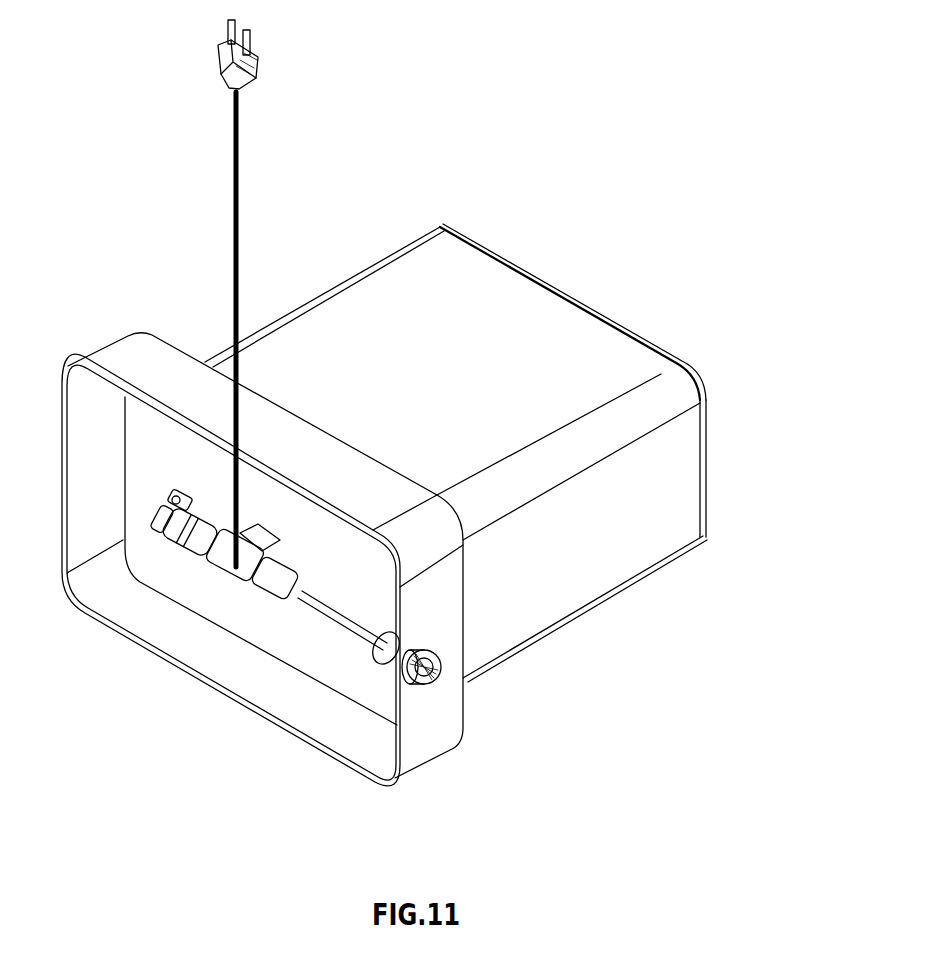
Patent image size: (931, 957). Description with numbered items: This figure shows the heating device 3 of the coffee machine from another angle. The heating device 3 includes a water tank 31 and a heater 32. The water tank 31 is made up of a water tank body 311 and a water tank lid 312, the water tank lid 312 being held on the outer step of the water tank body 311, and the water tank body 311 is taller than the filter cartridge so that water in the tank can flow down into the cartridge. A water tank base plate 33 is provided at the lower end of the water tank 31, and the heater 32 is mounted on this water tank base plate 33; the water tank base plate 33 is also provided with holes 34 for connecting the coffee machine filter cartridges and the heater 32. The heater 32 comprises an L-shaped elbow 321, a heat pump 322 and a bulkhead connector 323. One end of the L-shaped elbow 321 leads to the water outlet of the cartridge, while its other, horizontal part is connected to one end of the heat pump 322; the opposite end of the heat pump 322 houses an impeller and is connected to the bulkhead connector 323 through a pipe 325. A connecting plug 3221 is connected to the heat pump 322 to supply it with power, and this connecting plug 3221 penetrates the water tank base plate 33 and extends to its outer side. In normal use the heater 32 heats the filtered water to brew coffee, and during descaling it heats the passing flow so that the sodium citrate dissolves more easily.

The heating device 3 is at (833, 580).
The water tank 31 is at (776, 553).
The water tank body 311 is at (665, 567).
The water tank lid 312 is at (713, 549).
The heater 32 is at (769, 660).
The L-shaped elbow 321 is at (213, 535).
The heat pump 322 is at (285, 578).
The connecting plug 3221 is at (209, 58).
The bulkhead connector 323 is at (459, 680).
The pipe 325 is at (327, 622).
The water tank base plate 33 is at (131, 356).
The holes 34 is at (149, 483).